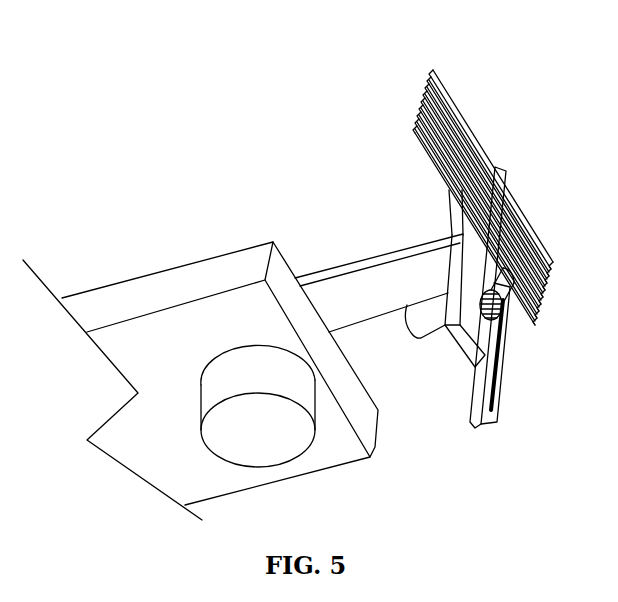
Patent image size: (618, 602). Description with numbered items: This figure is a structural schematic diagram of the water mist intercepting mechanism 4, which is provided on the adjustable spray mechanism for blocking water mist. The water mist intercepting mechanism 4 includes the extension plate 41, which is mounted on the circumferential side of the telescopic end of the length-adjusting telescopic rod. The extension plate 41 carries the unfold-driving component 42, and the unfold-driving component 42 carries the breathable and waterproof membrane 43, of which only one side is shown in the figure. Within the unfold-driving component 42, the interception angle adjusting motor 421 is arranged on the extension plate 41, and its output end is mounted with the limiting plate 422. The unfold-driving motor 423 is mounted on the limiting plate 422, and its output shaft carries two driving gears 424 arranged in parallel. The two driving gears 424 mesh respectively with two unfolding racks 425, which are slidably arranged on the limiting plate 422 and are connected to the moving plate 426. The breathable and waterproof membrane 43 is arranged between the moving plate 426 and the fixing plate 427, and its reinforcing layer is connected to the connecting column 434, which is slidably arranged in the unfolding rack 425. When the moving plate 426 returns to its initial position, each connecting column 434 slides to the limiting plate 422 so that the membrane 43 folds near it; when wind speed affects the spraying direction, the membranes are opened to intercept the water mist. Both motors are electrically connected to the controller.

The water mist intercepting mechanism 4 is at (372, 69).
The extension plate 41 is at (252, 312).
The interception angle adjusting motor 421 is at (265, 383).
The unfold-driving component 42 is at (330, 112).
The limiting plate 422 is at (310, 298).
The unfold-driving motor 423 is at (427, 313).
The driving gear 424 is at (485, 290).
The unfolding rack 425 is at (468, 230).
The moving plate 426 is at (455, 180).
The fixing plate 427 is at (498, 168).
The breathable and waterproof membrane 43 is at (418, 120).
The connecting column 434 is at (497, 410).